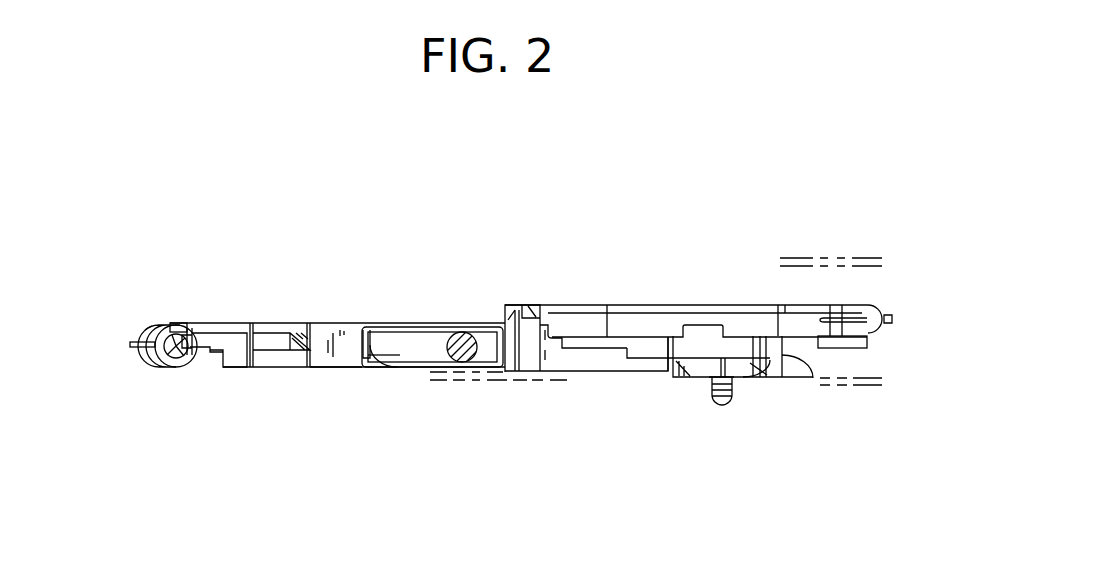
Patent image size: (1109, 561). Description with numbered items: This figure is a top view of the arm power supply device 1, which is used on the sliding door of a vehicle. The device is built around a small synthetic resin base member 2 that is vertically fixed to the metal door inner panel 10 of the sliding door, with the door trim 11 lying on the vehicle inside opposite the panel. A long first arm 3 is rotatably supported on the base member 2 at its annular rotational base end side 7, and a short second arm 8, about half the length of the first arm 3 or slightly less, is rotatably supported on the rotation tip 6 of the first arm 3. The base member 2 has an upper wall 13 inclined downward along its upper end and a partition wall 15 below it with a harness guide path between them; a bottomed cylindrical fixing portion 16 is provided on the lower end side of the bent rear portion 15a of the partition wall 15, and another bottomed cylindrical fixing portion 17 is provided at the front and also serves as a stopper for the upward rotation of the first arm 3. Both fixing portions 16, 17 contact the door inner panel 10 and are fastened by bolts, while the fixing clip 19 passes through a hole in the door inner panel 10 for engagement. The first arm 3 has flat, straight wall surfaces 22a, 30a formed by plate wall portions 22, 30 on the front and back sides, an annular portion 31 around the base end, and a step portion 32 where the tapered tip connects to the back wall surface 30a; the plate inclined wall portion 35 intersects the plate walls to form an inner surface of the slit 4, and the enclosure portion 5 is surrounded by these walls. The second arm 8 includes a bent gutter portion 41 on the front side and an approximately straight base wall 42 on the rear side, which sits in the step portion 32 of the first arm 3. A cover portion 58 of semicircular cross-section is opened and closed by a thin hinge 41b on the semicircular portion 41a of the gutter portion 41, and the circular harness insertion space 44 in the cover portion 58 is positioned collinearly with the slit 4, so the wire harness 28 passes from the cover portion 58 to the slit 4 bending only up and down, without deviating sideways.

The arm power supply device 1 is at (617, 203).
The base member 2 is at (683, 278).
The first arm 3 is at (383, 378).
The slit 4 is at (415, 338).
The enclosure portion 5 is at (386, 328).
The rotation tip 6 is at (283, 368).
The rotational base end side 7 is at (619, 371).
The second arm 8 is at (216, 305).
The door inner panel 10 is at (877, 388).
The door trim 11 is at (857, 258).
The upper wall 13 is at (628, 323).
The partition wall 15 is at (663, 371).
The bent rear portion 15a is at (803, 372).
The fixing portion 16 is at (772, 378).
The fixing portion 17 is at (543, 371).
The fixing clip 19 is at (719, 404).
The plate wall portion 22 is at (427, 372).
The wall surface 22a is at (357, 368).
The wire harness 28 is at (463, 362).
The plate wall portion 30 is at (432, 328).
The wall surface 30a is at (347, 323).
The annular portion 31 is at (590, 360).
The step portion 32 is at (297, 323).
The plate inclined wall portion 35 is at (398, 368).
The gutter portion 41 is at (192, 322).
The portion having a semicircular shape 41a is at (147, 325).
The thin hinge 41b is at (141, 364).
The base wall 42 is at (268, 325).
The harness insertion space 44 is at (191, 362).
The cover portion 58 is at (170, 360).